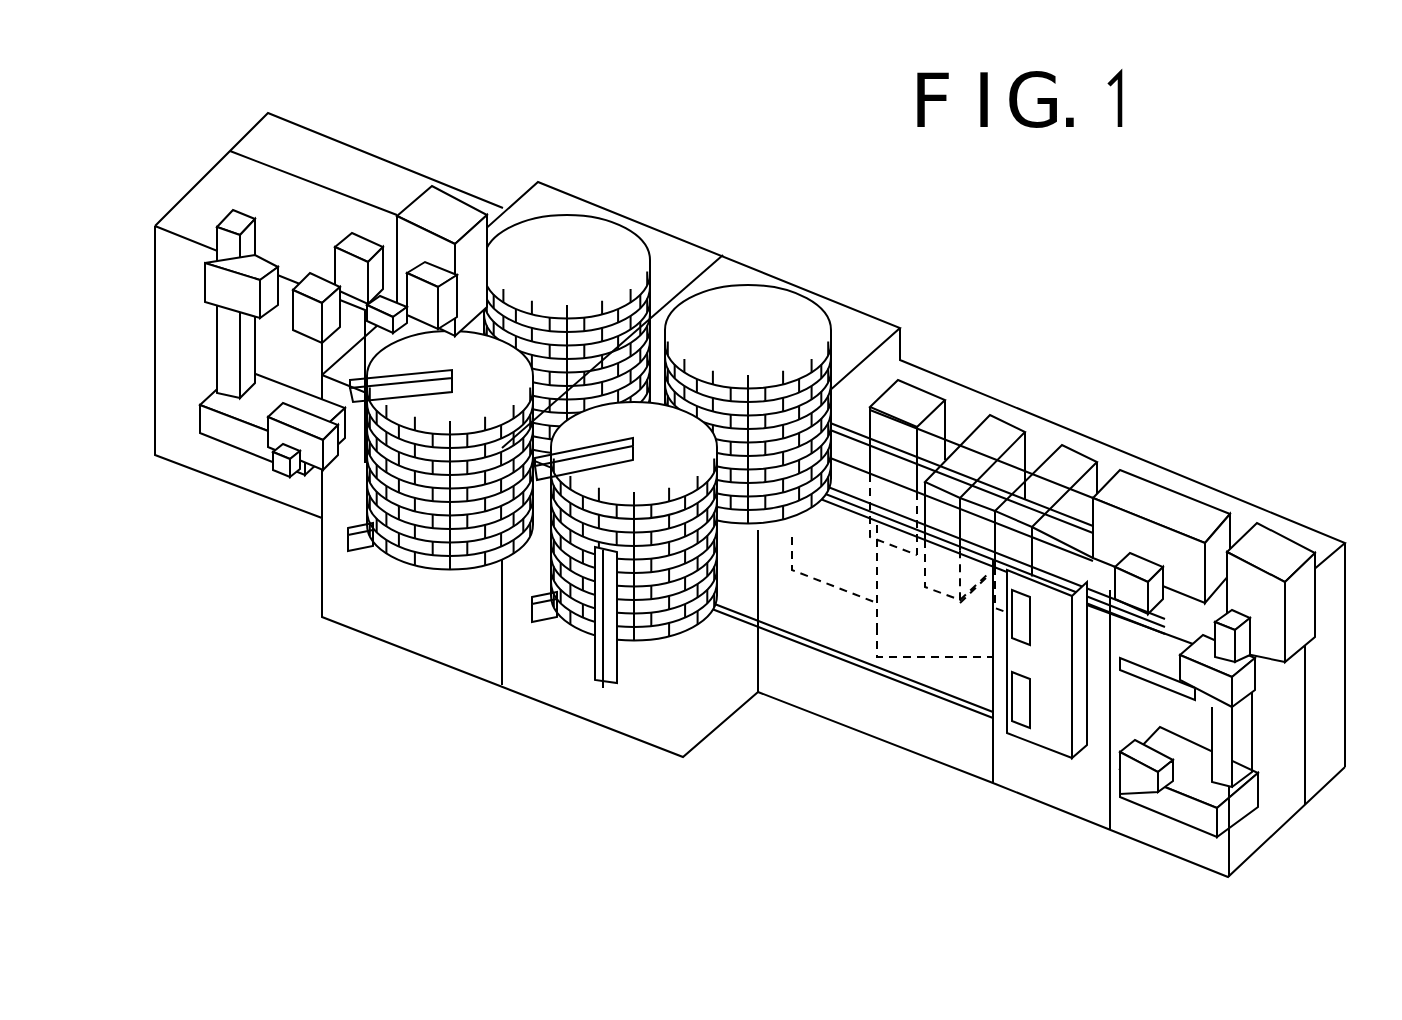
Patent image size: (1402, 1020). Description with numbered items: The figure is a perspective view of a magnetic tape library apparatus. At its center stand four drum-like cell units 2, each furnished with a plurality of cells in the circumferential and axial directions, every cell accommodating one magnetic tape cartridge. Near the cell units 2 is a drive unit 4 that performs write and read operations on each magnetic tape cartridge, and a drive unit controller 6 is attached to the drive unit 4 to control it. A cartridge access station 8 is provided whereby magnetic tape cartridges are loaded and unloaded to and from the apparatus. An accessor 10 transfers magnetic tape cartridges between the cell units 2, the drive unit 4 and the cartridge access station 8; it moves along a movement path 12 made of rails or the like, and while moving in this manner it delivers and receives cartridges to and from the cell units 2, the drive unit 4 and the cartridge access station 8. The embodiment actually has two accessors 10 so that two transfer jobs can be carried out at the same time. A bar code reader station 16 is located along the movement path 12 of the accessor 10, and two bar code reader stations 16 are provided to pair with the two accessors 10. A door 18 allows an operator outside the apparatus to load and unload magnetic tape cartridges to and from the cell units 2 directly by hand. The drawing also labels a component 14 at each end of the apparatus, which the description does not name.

The cell unit 2 is at (762, 303).
The drive unit 4 is at (1062, 457).
The drive unit controller 6 is at (920, 403).
The cartridge access station 8 is at (1052, 733).
The accessor 10 is at (213, 345).
The movement path 12 is at (857, 668).
The loader/unloader unit 14 is at (431, 200).
The bar code reader station 16 is at (292, 442).
The door 18 is at (603, 672).